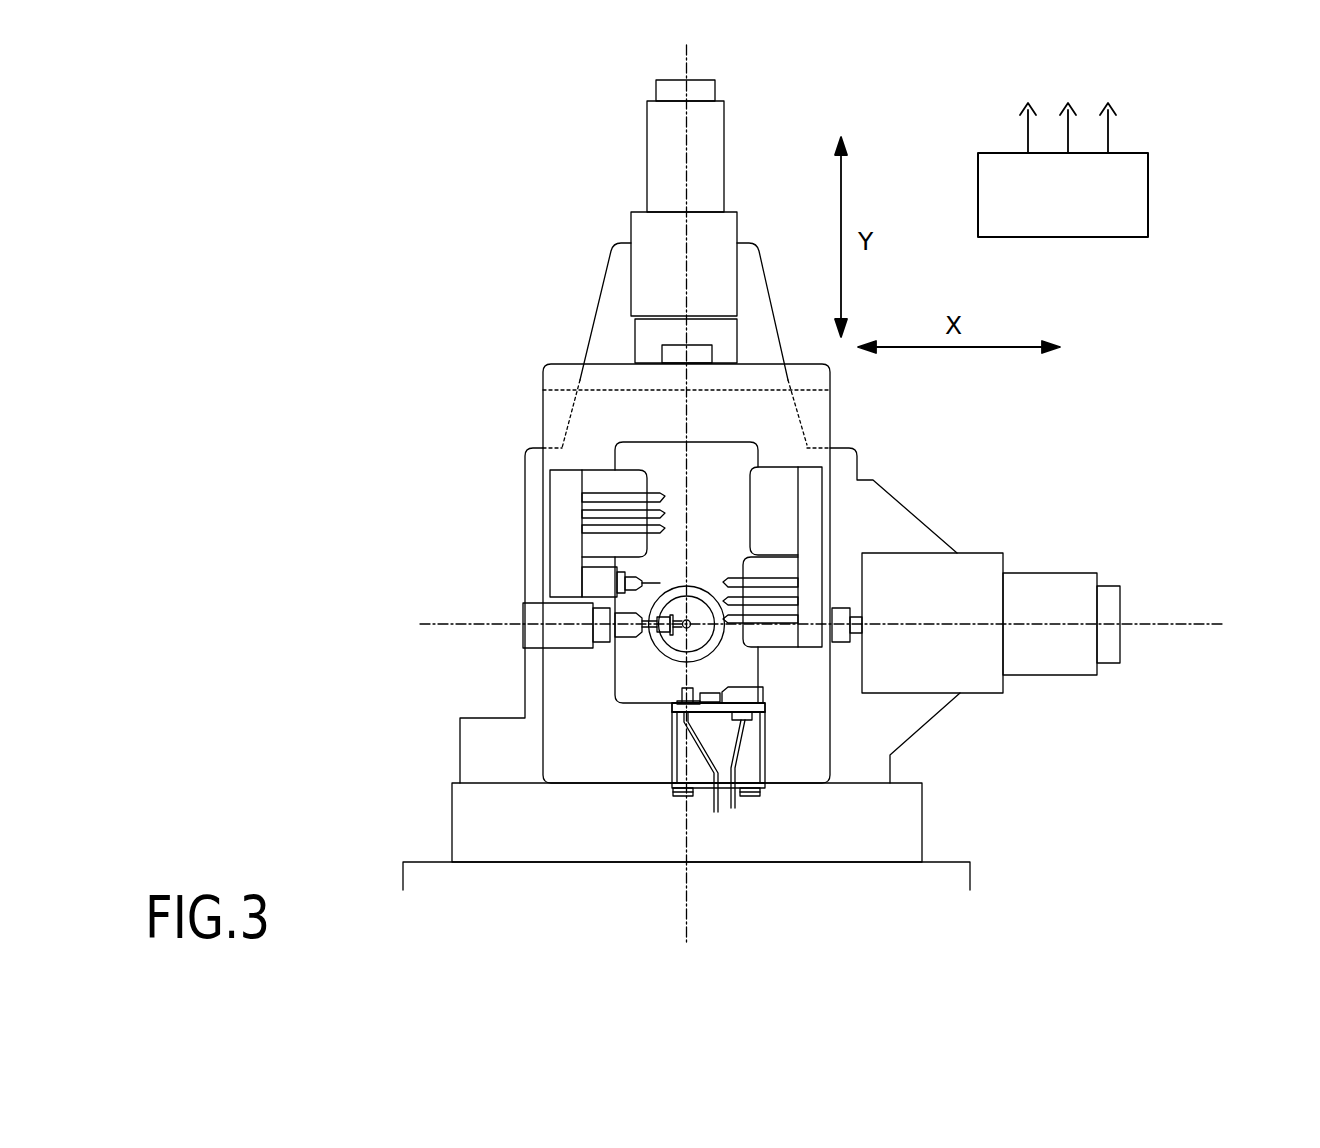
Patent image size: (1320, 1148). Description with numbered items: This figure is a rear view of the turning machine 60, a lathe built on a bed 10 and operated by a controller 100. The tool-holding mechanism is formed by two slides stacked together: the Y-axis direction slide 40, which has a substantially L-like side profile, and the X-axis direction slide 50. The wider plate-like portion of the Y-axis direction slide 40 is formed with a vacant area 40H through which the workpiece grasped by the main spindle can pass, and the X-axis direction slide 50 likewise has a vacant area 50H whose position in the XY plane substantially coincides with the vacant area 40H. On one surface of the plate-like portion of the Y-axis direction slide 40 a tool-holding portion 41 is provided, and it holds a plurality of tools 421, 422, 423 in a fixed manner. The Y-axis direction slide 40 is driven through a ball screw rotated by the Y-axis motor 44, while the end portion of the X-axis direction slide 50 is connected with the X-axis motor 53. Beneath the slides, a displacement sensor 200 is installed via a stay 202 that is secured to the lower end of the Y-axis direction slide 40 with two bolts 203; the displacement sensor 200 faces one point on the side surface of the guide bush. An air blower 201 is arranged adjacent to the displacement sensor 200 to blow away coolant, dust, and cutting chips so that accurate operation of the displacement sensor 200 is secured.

The turning machine 60 is at (375, 97).
The Y-axis motor 44 is at (722, 170).
The X-axis direction slide 50 is at (610, 330).
The vacant area 50H is at (713, 443).
The Y-axis direction slide 40 is at (553, 410).
The vacant area 40H is at (652, 445).
The tool-holding portion 41 is at (830, 592).
The tool 421 is at (767, 622).
The tool 422 is at (800, 604).
The tool 423 is at (815, 580).
The X-axis motor 53 is at (1040, 583).
The displacement sensor 200 is at (680, 690).
The air blower 201 is at (745, 700).
The stay 202 is at (713, 810).
The bolts 203 is at (682, 798).
The bed 10 is at (428, 870).
The controller 100 is at (1148, 213).